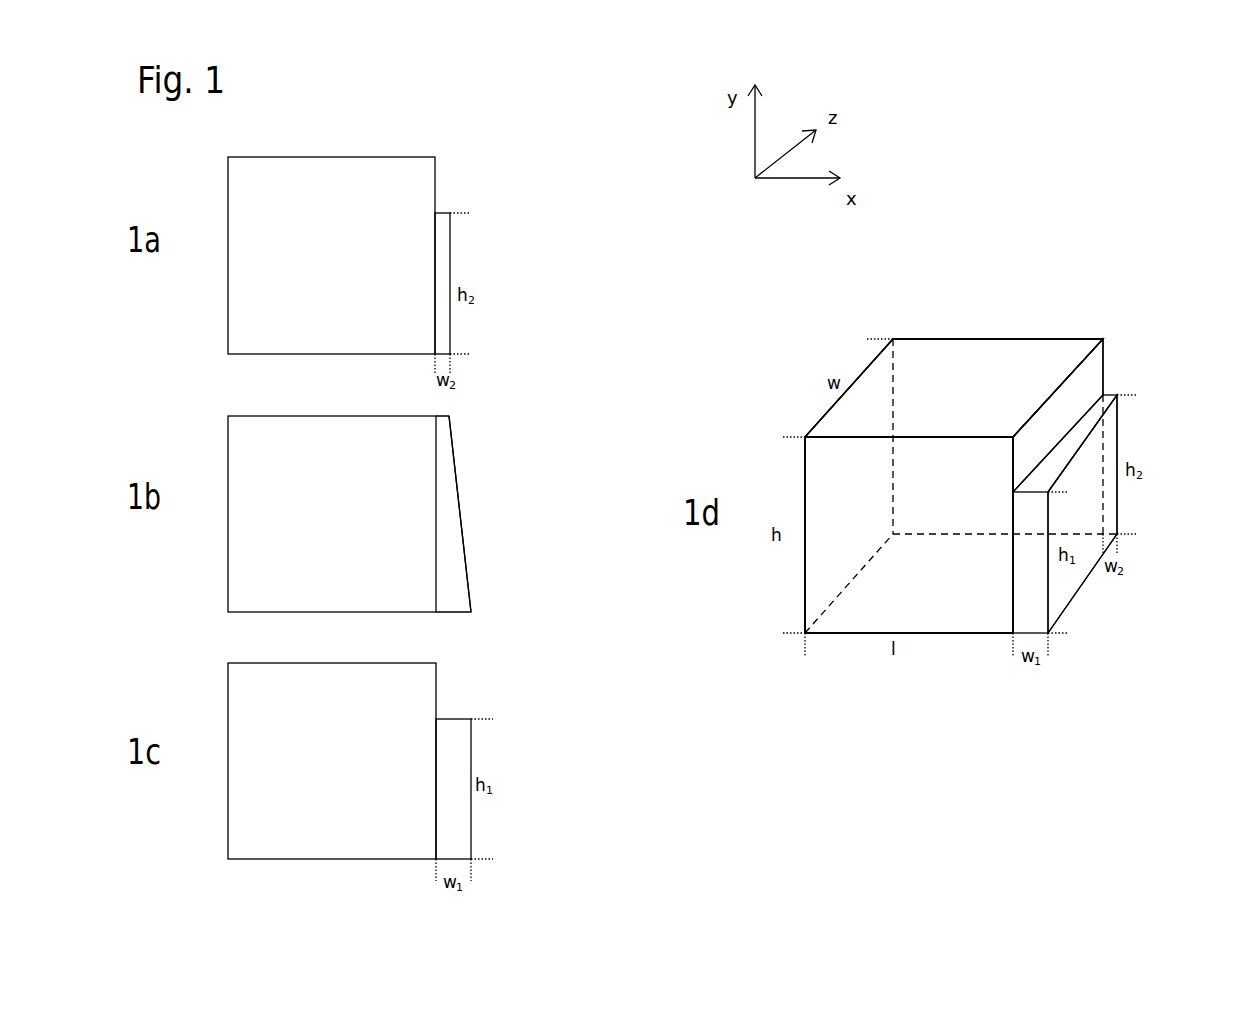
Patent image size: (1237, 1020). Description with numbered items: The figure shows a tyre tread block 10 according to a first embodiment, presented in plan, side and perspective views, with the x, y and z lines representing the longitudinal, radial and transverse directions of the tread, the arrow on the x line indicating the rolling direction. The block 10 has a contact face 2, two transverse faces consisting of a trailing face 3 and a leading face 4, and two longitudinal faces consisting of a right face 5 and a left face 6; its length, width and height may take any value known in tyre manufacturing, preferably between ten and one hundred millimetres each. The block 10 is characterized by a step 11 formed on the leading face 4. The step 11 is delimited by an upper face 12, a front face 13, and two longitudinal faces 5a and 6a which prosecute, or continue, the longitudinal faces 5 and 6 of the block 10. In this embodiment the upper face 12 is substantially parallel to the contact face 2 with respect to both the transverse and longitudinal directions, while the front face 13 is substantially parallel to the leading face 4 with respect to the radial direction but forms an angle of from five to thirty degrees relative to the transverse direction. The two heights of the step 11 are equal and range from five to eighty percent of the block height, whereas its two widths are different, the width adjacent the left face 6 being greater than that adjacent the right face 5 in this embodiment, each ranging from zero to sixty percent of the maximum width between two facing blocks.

The contact face 2 is at (860, 403).
The trailing face 3 is at (843, 492).
The leading face 4 is at (1067, 402).
The right face 5 is at (1005, 381).
The longitudinal face of the step 5a is at (440, 233).
The left face 6 is at (929, 563).
The longitudinal face of the step 6a is at (455, 817).
The block 10 is at (1018, 298).
The step 11 is at (1123, 515).
The upper face 12 is at (450, 514).
The front face 13 is at (468, 578).